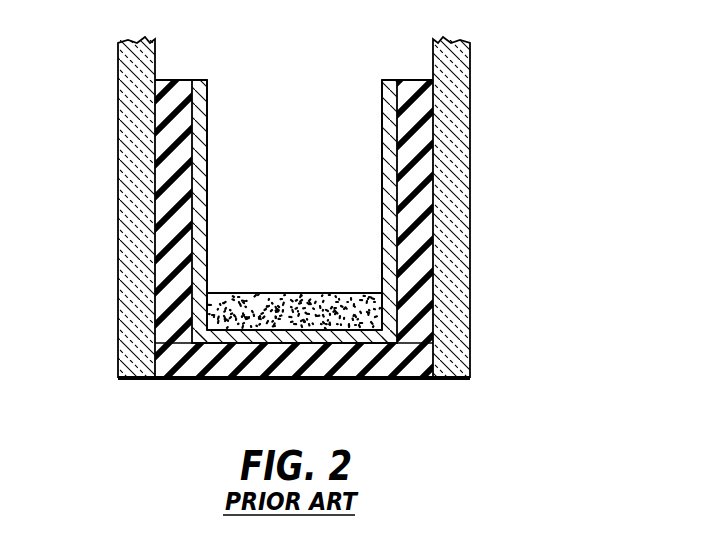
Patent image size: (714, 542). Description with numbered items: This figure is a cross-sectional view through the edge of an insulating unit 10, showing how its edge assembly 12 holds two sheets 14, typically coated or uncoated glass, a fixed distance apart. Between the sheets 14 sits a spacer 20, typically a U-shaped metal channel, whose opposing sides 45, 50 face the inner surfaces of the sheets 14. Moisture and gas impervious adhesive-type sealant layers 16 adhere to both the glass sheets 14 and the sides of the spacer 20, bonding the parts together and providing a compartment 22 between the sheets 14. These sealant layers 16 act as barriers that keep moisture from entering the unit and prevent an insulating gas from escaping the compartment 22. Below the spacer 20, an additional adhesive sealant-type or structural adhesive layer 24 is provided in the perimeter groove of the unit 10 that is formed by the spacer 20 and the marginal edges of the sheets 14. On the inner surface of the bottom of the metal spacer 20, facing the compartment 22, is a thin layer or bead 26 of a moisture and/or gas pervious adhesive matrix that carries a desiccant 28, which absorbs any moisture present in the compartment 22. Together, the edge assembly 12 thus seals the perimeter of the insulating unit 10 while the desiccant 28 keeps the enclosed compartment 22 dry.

The insulating unit 10 is at (546, 143).
The edge assembly 12 is at (405, 380).
The sheets 14 is at (118, 84).
The sealant layers 16 is at (175, 80).
The spacer 20 is at (250, 343).
The compartment 22 is at (306, 204).
The structural adhesive layer 24 is at (345, 370).
The bead 26 is at (250, 293).
The desiccant 28 is at (323, 293).
The side 45 is at (207, 137).
The side 50 is at (382, 120).